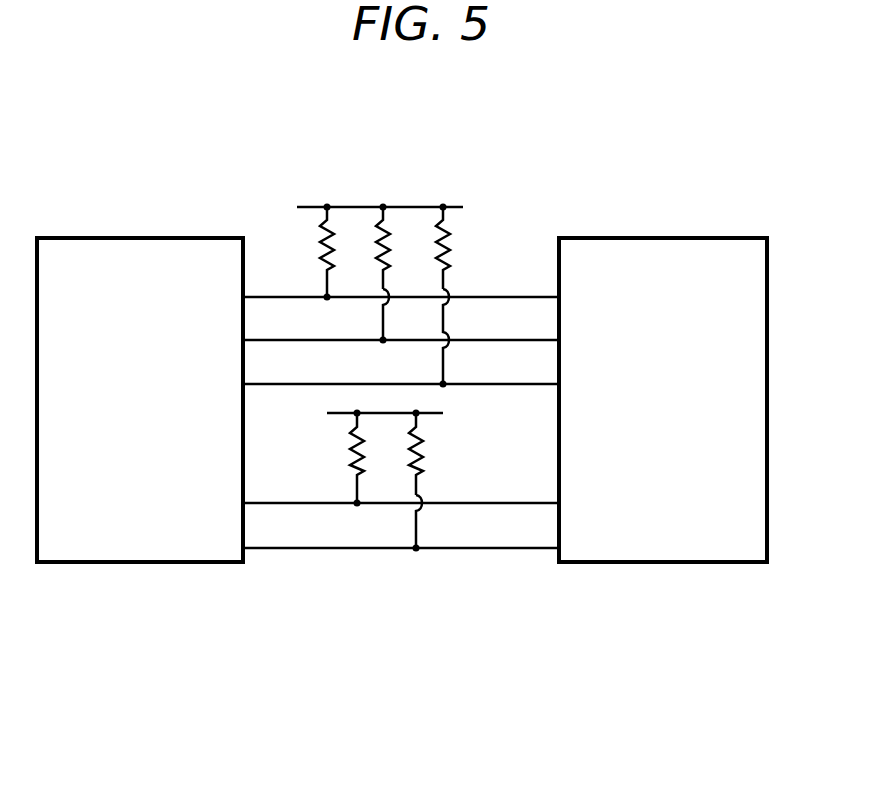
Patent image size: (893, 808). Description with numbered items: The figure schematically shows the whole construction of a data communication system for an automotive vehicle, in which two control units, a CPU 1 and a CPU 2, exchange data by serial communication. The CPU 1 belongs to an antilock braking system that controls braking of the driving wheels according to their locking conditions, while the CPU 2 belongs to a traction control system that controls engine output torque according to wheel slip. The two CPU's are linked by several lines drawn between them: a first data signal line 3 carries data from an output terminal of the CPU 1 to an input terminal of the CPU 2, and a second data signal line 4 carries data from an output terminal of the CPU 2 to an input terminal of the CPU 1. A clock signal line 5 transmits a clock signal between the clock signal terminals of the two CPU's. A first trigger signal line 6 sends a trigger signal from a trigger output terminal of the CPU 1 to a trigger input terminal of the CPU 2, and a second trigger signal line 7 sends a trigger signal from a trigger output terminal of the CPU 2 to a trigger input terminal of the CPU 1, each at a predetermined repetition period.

The CPU 1 is at (147, 238).
The CPU 2 is at (623, 238).
The first data signal line 3 is at (477, 340).
The second data signal line 4 is at (521, 384).
The clock signal line 5 is at (266, 297).
The first trigger signal line 6 is at (498, 503).
The second trigger signal line 7 is at (347, 548).